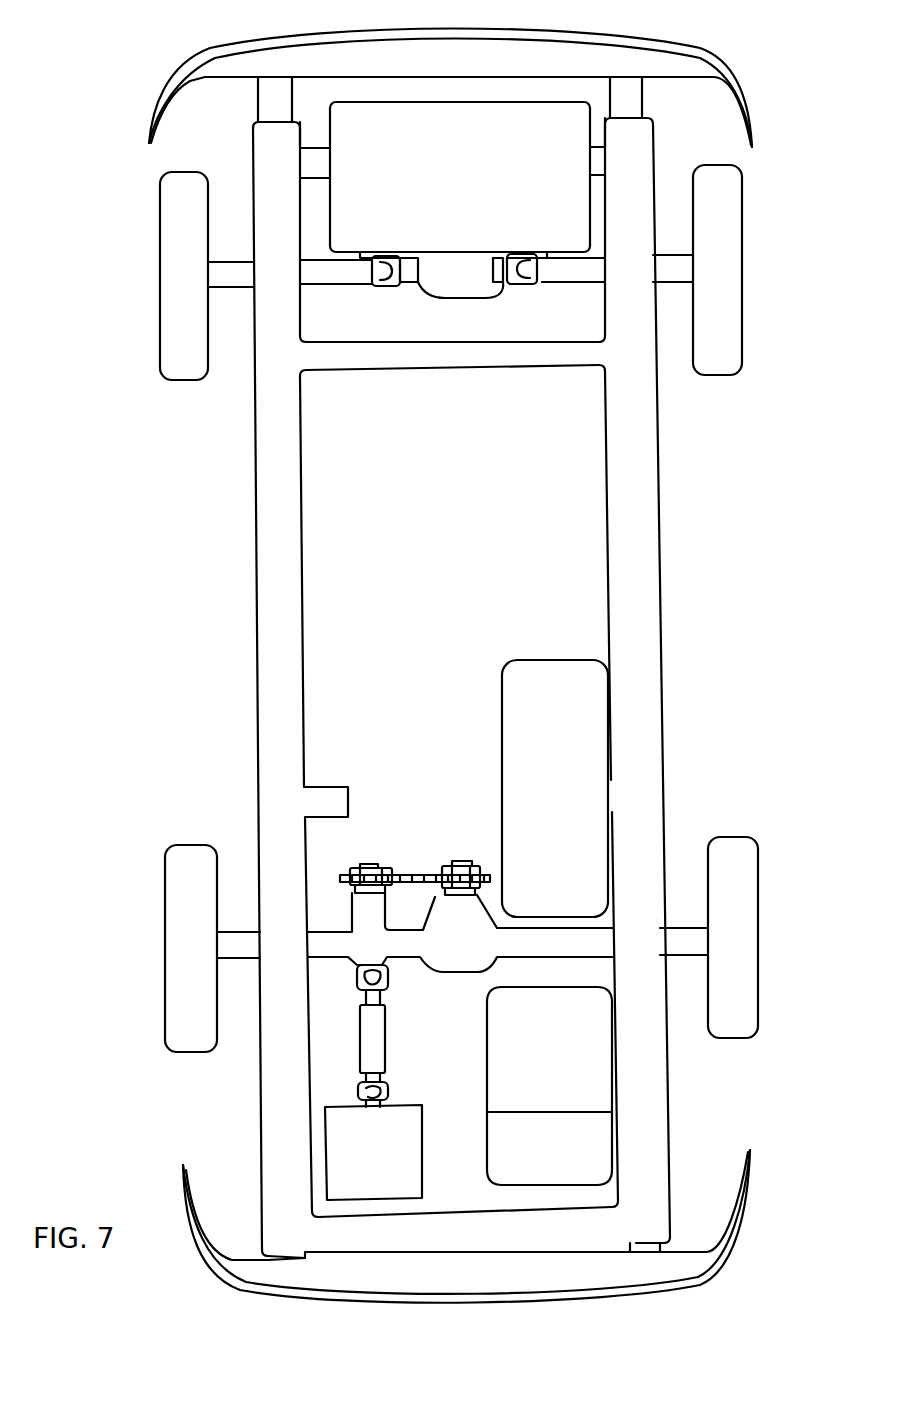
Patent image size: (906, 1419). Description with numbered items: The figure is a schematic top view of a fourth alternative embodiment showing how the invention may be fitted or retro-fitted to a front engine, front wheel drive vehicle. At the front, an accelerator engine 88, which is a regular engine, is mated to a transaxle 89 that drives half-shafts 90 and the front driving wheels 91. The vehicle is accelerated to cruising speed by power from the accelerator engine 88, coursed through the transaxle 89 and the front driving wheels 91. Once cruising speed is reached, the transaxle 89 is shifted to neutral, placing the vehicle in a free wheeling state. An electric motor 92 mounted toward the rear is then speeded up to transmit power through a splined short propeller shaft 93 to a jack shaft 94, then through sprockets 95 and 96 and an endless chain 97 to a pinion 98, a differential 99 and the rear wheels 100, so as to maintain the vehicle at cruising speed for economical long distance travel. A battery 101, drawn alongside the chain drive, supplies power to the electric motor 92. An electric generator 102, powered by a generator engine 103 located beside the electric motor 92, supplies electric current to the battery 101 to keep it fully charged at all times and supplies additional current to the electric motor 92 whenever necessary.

The accelerator engine 88 is at (462, 190).
The transaxle 89 is at (466, 290).
The half-shafts 90 is at (325, 284).
The front driving wheels 91 is at (160, 200).
The electric motor 92 is at (380, 1168).
The splined short propeller shaft 93 is at (385, 1045).
The jack shaft 94 is at (368, 868).
The sprocket 95 is at (352, 886).
The sprocket 96 is at (440, 888).
The endless chain 97 is at (418, 872).
The pinion 98 is at (463, 868).
The differential 99 is at (470, 950).
The wheels 100 is at (165, 878).
The battery 101 is at (558, 775).
The electric generator 102 is at (557, 1161).
The generator engine 103 is at (557, 1066).